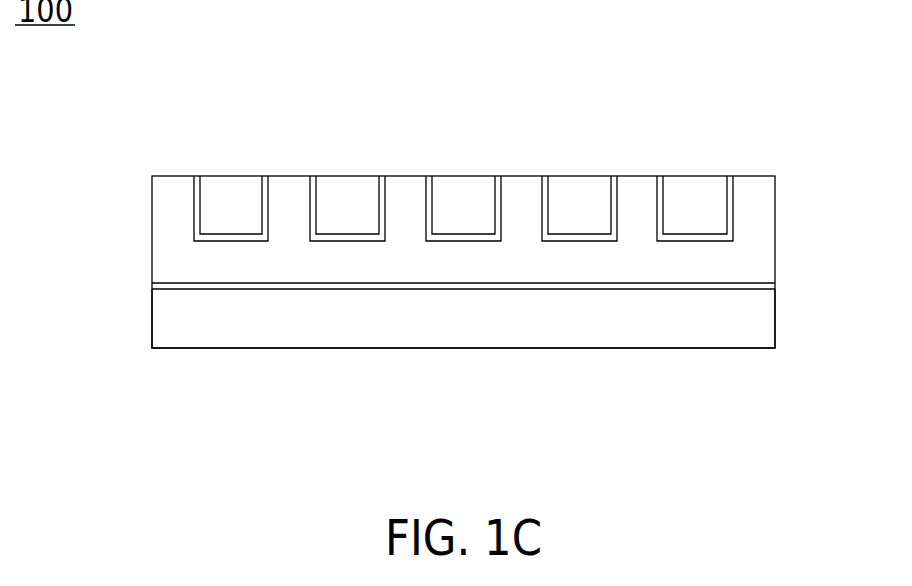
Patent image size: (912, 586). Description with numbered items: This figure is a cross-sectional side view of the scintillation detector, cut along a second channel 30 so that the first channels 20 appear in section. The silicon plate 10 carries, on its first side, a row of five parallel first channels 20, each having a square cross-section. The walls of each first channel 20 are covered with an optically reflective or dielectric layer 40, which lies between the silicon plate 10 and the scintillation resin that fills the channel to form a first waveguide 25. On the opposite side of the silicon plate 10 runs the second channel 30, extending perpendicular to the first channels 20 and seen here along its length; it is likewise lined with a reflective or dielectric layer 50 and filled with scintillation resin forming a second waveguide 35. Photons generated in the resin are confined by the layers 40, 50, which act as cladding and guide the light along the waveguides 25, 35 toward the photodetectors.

The silicon plate 10 is at (747, 237).
The first channel 20 is at (233, 188).
The first waveguide 25 is at (217, 188).
The reflective or dielectric layer 40 is at (317, 195).
The second channel 30 is at (182, 322).
The second waveguide 35 is at (313, 323).
The reflective or dielectric layer 50 is at (477, 285).